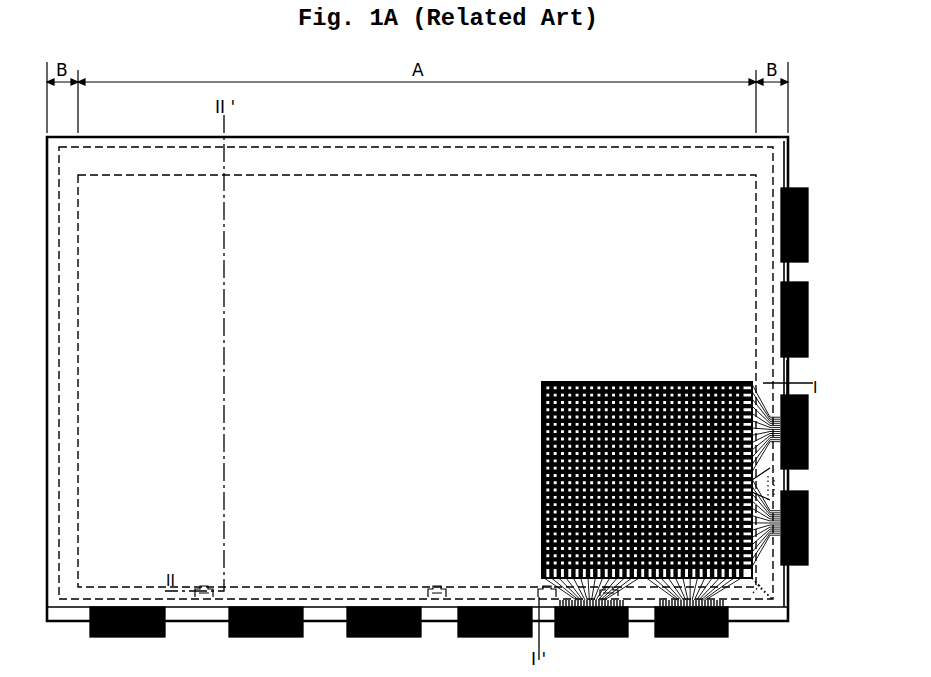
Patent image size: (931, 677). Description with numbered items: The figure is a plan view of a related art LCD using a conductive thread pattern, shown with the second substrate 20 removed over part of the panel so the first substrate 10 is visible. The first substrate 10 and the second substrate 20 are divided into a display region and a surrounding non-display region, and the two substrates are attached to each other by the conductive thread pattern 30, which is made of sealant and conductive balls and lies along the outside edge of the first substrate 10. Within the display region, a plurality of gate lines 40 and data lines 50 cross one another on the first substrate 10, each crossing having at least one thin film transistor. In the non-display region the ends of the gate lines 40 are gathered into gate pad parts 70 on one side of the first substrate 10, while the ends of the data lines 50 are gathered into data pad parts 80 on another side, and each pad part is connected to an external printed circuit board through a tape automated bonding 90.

The first substrate 10 is at (788, 171).
The second substrate 20 is at (778, 373).
The conductive thread pattern 30 is at (765, 270).
The gate lines 40 is at (746, 382).
The data lines 50 is at (703, 382).
The gate pad part 70 is at (777, 571).
The data pad parts 80 is at (640, 601).
The tape automated bonding 90 is at (808, 537).